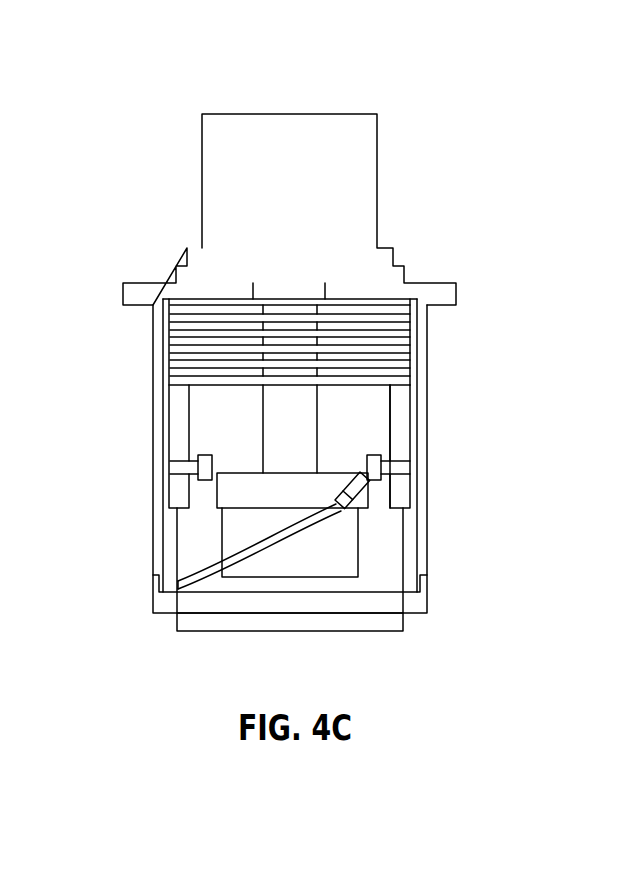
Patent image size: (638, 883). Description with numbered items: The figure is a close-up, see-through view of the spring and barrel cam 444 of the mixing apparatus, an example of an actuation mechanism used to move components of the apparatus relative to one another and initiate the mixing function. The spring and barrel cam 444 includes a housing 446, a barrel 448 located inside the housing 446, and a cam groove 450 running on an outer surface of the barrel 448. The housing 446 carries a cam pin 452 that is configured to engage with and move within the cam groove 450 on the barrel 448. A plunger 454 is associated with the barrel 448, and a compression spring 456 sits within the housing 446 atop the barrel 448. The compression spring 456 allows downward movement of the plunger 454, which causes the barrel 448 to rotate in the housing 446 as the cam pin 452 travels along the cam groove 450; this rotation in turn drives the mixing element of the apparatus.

The spring and barrel cam 444 is at (85, 93).
The housing 446 is at (422, 333).
The barrel 448 is at (402, 426).
The cam groove 450 is at (357, 500).
The cam pin 452 is at (183, 467).
The plunger 454 is at (290, 424).
The compression spring 456 is at (203, 322).